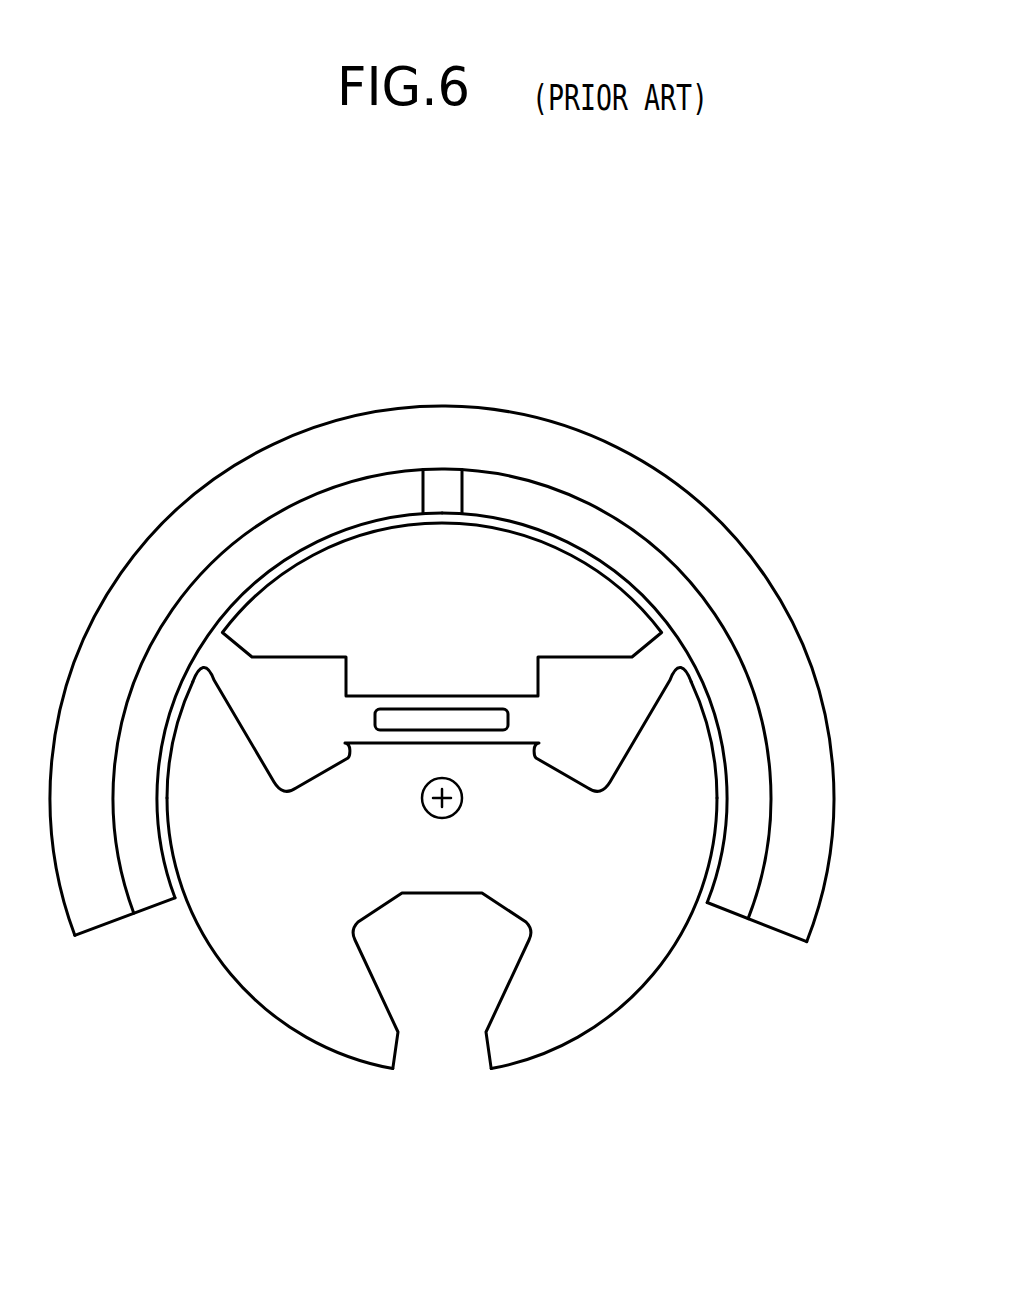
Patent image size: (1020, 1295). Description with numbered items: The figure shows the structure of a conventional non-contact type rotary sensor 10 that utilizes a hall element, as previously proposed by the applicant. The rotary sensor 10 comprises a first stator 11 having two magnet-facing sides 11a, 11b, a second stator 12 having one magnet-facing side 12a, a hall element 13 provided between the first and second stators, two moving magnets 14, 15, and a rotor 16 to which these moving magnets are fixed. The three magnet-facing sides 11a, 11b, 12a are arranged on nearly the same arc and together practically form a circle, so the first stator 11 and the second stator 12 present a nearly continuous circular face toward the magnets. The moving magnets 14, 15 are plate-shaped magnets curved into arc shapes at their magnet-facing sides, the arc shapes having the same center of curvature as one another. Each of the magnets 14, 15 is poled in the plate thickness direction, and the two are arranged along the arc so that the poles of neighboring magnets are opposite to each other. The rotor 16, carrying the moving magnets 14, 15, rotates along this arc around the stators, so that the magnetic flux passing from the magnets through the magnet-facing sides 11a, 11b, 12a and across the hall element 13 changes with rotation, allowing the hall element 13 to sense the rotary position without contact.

The rotary sensor 10 is at (618, 358).
The first stator 11 is at (445, 884).
The magnet-facing side 11a is at (207, 948).
The magnet-facing side 11b is at (619, 1009).
The second stator 12 is at (440, 649).
The magnet-facing side 12a is at (453, 523).
The hall element 13 is at (486, 718).
The moving magnet 14 is at (160, 693).
The moving magnet 15 is at (738, 668).
The rotor 16 is at (690, 512).